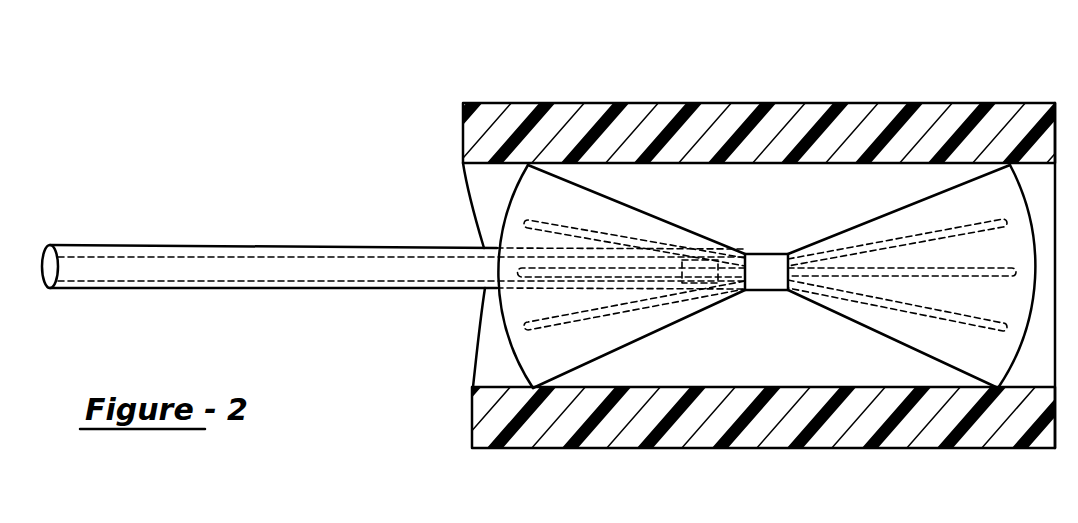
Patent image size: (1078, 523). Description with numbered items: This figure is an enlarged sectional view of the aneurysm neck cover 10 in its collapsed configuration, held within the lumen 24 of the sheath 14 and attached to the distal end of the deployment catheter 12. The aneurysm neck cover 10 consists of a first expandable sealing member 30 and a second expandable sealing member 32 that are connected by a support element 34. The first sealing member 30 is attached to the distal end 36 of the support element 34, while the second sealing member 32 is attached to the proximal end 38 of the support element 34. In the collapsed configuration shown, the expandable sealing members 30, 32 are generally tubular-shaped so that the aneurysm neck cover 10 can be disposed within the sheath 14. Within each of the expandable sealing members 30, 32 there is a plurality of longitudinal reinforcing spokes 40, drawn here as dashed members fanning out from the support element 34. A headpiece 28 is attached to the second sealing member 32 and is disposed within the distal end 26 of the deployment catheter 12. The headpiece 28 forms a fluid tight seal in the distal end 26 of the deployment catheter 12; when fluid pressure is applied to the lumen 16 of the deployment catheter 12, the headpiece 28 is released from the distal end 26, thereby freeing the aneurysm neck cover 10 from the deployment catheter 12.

The aneurysm neck cover 10 is at (907, 196).
The deployment catheter 12 is at (143, 246).
The sheath 14 is at (497, 103).
The lumen 16 is at (283, 267).
The lumen 24 is at (478, 188).
The distal end 26 is at (643, 293).
The headpiece 28 is at (693, 267).
The first expandable sealing member 30 is at (863, 222).
The second expandable sealing member 32 is at (594, 190).
The support element 34 is at (773, 254).
The distal end 36 is at (790, 291).
The proximal end 38 is at (745, 290).
The longitudinal reinforcing spokes 40 is at (593, 320).